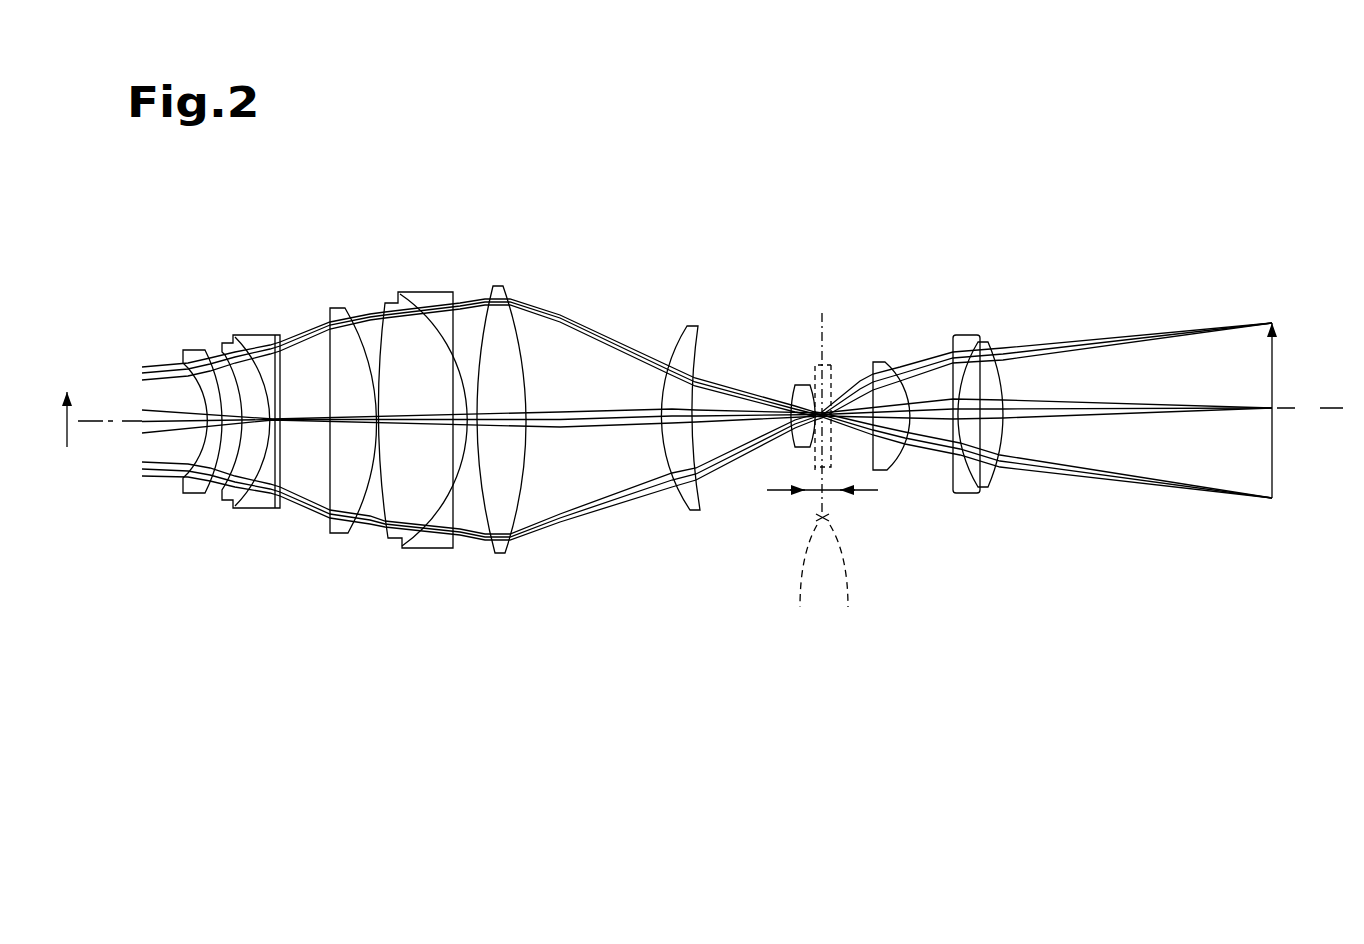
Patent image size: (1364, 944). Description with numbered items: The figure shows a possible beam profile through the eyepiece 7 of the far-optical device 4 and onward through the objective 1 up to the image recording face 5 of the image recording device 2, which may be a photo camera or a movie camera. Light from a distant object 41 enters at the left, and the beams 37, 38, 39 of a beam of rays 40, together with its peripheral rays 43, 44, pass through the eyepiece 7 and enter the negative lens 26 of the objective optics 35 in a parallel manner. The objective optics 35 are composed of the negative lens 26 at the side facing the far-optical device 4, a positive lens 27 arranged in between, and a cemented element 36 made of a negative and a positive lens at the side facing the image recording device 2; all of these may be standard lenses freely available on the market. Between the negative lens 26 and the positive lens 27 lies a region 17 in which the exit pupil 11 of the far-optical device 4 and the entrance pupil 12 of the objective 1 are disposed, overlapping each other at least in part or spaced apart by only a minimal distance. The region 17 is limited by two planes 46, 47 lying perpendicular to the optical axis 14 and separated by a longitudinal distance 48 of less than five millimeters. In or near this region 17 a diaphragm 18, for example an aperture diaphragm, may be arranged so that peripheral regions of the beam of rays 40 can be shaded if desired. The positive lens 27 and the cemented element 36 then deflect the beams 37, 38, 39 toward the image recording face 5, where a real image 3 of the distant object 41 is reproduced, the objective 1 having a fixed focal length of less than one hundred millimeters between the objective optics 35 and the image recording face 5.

The objective 1 is at (910, 534).
The image recording device 2 is at (1267, 221).
The image 3 is at (1268, 437).
The far-optical device 4 is at (294, 608).
The image recording face 5 is at (1268, 365).
The eyepiece 7 is at (447, 202).
The exit pupil 11 is at (795, 443).
The entrance pupil 12 is at (839, 390).
The optical axis 14 is at (1306, 407).
The region 17 is at (831, 364).
The diaphragm 18 is at (812, 364).
The negative lens 26 is at (800, 384).
The positive lens 27 is at (884, 362).
The objective optics 35 is at (899, 207).
The cemented element 36 is at (988, 442).
The beam 37 is at (575, 316).
The beam 38 is at (595, 327).
The beam 39 is at (622, 342).
The beam of rays 40 is at (552, 297).
The distant object 41 is at (80, 384).
The peripheral ray 43 is at (708, 412).
The peripheral ray 44 is at (610, 508).
The plane 46 is at (799, 584).
The plane 47 is at (847, 584).
The longitudinal distance 48 is at (784, 493).